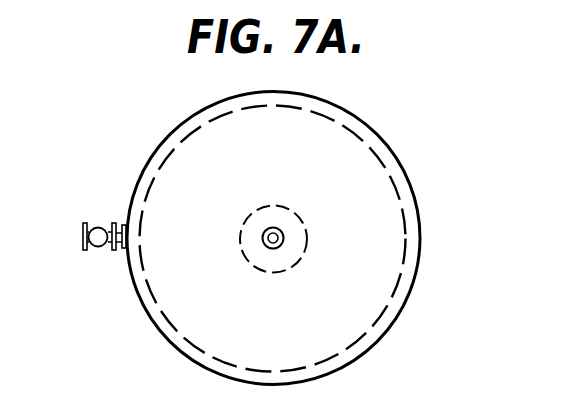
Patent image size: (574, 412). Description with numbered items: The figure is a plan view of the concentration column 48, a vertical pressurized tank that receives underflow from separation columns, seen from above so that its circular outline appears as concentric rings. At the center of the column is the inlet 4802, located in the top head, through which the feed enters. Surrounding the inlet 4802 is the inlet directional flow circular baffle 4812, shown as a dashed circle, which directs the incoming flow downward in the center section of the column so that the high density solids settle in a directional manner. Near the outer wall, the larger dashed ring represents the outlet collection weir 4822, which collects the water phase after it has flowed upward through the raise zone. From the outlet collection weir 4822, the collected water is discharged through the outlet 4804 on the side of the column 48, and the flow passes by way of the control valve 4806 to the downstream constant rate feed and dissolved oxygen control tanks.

The concentration column 48 is at (411, 303).
The outlet collection weir 4822 is at (412, 236).
The inlet directional flow circular baffle 4812 is at (283, 207).
The inlet 4802 is at (270, 248).
The outlet 4804 is at (121, 230).
The control valve 4806 is at (98, 246).